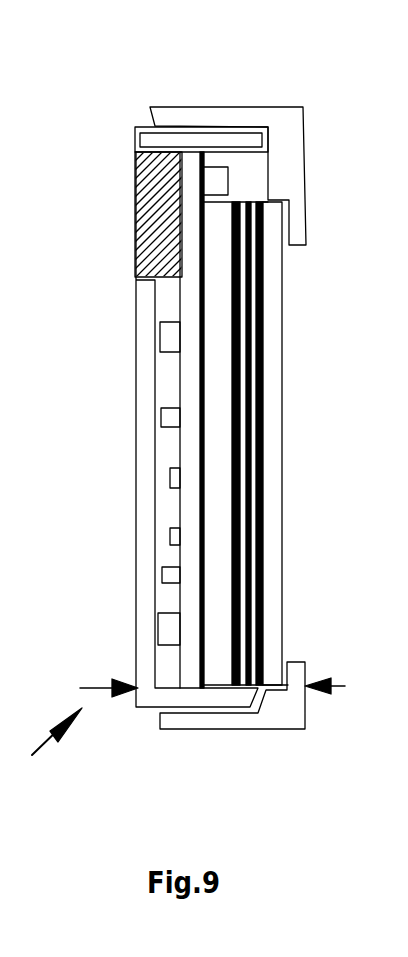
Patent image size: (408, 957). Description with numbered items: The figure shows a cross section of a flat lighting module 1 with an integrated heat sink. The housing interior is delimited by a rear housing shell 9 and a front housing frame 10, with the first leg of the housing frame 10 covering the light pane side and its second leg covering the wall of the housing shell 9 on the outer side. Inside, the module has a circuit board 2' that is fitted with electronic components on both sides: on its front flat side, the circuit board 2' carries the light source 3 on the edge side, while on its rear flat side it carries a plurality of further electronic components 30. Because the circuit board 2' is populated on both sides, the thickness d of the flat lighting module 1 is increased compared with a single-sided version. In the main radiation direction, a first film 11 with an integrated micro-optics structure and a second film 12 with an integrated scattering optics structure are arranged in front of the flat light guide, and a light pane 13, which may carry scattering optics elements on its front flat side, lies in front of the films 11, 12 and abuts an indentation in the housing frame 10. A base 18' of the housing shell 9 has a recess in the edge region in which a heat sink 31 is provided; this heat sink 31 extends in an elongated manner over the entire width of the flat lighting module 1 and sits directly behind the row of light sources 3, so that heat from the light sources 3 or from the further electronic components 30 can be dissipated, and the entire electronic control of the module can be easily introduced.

The flat lighting module 1 is at (52, 754).
The circuit board 2' is at (182, 420).
The light source 3 is at (215, 177).
The housing shell 9 is at (138, 653).
The housing frame 10 is at (288, 132).
The first film 11 is at (238, 302).
The second film 12 is at (253, 345).
The light pane 13 is at (273, 432).
The base 18' is at (165, 417).
The further electronic components 30 is at (163, 572).
The heat sink 31 is at (137, 225).
The thickness d is at (219, 715).